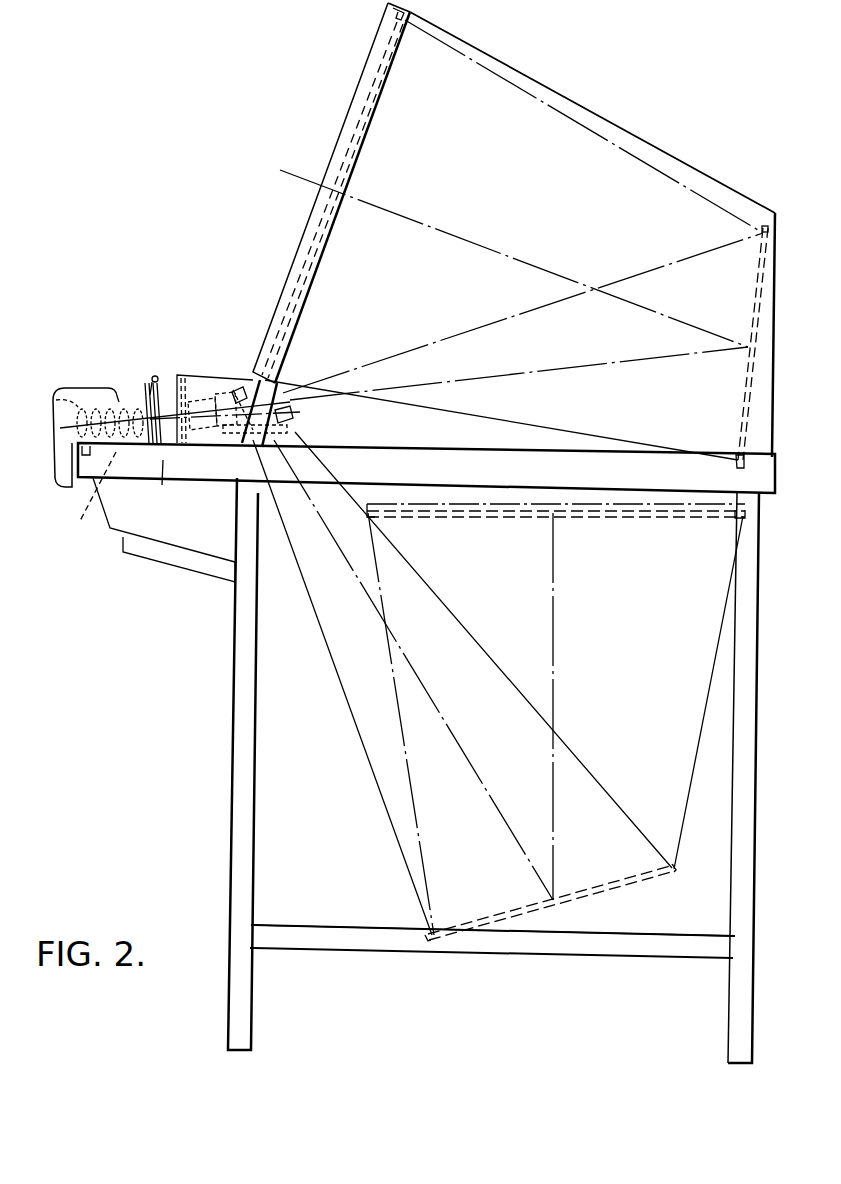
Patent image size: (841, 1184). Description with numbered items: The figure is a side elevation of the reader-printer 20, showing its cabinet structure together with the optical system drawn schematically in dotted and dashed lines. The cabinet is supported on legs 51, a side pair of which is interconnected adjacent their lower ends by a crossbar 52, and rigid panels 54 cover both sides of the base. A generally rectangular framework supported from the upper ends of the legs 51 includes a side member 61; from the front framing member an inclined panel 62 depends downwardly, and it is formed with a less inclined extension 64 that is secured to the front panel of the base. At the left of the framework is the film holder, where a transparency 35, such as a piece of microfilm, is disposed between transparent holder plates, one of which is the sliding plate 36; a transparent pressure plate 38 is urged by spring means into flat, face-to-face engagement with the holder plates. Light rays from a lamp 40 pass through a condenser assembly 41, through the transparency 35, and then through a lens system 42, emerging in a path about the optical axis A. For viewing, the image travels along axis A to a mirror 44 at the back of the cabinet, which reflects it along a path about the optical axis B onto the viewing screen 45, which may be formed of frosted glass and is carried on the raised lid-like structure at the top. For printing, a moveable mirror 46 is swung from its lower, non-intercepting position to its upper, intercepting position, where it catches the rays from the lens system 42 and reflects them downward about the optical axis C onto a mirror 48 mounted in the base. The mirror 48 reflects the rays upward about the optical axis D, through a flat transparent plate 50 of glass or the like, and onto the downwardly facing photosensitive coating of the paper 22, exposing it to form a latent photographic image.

The reader-printer 20 is at (200, 252).
The paper 22 is at (655, 503).
The transparency 35 is at (146, 402).
The transparent holder plate 36 is at (135, 400).
The transparent pressure plate 38 is at (160, 376).
The lamp 40 is at (62, 400).
The condenser assembly 41 is at (91, 497).
The lens system 42 is at (210, 398).
The mirror 44 is at (757, 303).
The viewing screen 45 is at (346, 148).
The moveable mirror 46 is at (285, 408).
The mirror 48 is at (607, 890).
The flat transparent plate 50 is at (668, 517).
The legs 51 is at (240, 1022).
The crossbar 52 is at (380, 945).
The rigid panels 54 is at (322, 905).
The side member 61 is at (163, 460).
The inclined panel 62 is at (106, 530).
The less inclined extension 64 is at (178, 552).
The optical axis A is at (525, 368).
The optical axis B is at (495, 250).
The optical axis C is at (445, 722).
The optical axis D is at (555, 643).